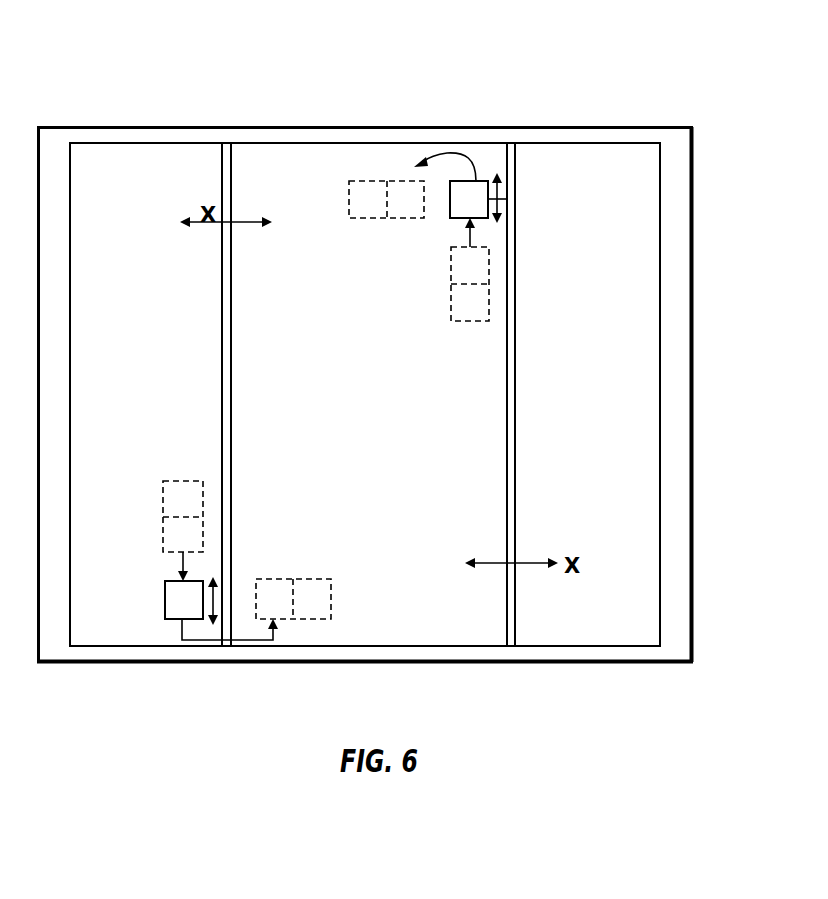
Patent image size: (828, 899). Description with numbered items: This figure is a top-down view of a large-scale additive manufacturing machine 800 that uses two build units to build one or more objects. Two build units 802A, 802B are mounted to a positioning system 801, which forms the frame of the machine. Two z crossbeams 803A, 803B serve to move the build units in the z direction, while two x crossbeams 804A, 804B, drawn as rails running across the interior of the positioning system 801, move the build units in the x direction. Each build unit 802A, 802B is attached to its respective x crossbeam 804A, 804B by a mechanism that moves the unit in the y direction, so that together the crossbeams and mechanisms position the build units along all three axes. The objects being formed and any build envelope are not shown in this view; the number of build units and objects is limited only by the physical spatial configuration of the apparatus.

The large-scale additive manufacturing machine 800 is at (598, 67).
The positioning system 801 is at (675, 126).
The build unit 802A is at (479, 181).
The build unit 802B is at (165, 600).
The z crossbeam 803A is at (153, 126).
The z crossbeam 803B is at (113, 663).
The x crossbeam 804A is at (232, 343).
The x crossbeam 804B is at (516, 450).